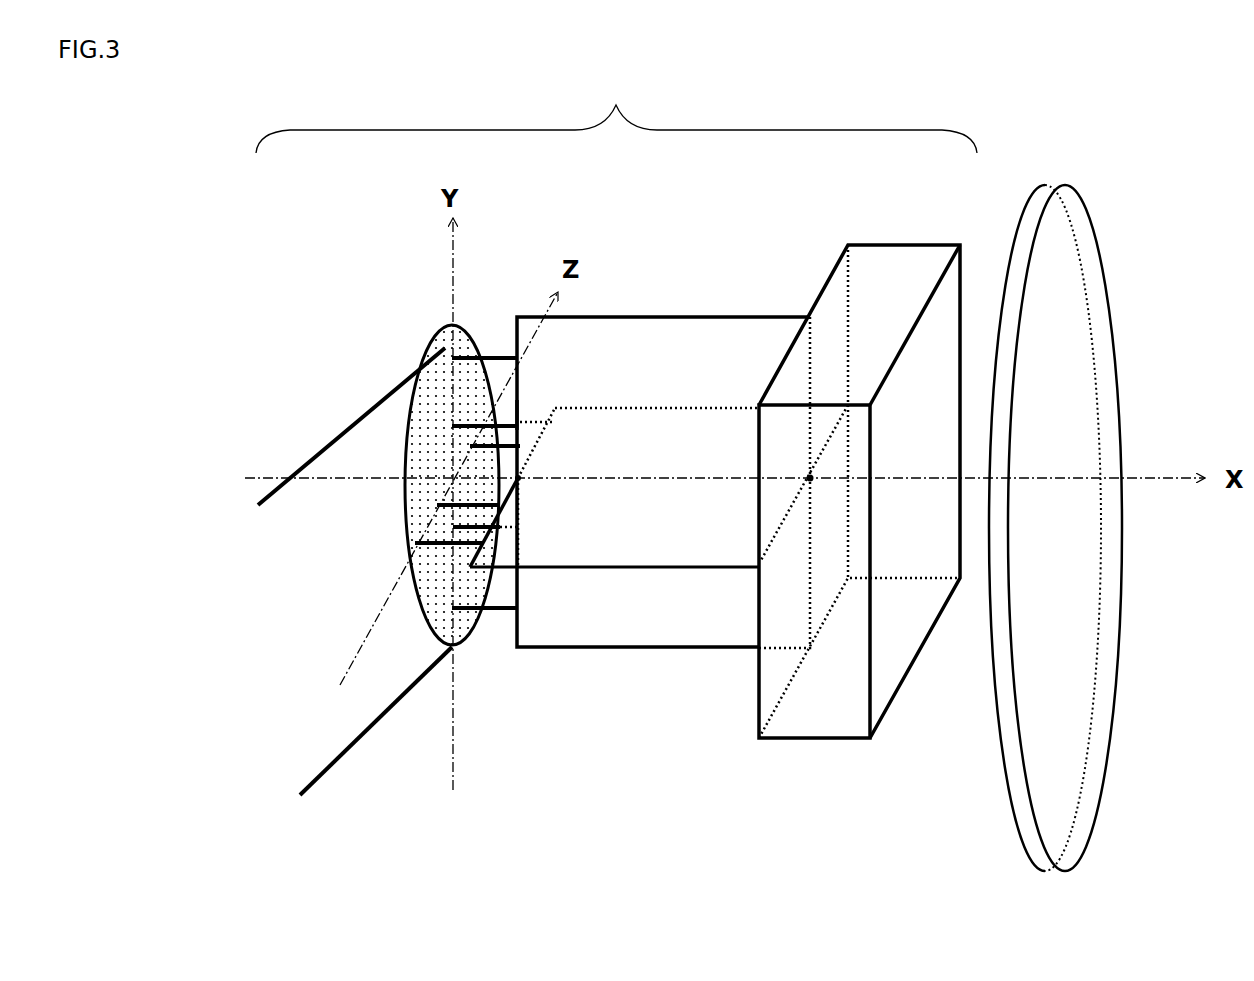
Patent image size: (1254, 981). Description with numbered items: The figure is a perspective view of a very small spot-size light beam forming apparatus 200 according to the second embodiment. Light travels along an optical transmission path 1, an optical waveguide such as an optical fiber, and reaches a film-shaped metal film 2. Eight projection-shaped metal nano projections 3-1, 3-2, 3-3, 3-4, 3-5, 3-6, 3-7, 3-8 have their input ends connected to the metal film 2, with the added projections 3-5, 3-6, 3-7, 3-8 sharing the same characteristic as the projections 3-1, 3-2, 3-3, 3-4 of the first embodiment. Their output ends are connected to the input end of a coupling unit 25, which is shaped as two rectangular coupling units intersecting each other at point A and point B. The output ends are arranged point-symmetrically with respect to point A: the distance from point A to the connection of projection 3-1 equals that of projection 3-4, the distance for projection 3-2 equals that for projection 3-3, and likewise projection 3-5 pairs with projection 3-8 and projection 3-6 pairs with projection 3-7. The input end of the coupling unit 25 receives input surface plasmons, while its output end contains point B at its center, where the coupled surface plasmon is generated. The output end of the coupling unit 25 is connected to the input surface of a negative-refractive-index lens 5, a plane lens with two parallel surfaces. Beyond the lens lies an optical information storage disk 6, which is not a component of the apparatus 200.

The very small spot-size light beam forming apparatus 200 is at (616, 110).
The optical transmission path 1 is at (330, 732).
The metal film 2 is at (440, 328).
The coupling unit 25 is at (703, 317).
The metal nano projection 3-1 is at (490, 355).
The metal nano projection 3-2 is at (455, 425).
The metal nano projection 3-3 is at (504, 530).
The metal nano projection 3-4 is at (495, 612).
The metal nano projection 3-5 is at (518, 425).
The metal nano projection 3-6 is at (480, 445).
The metal nano projection 3-7 is at (475, 505).
The metal nano projection 3-8 is at (430, 542).
The negative-refractive-index lens 5 is at (838, 273).
The optical information storage disk 6 is at (1090, 238).
The point A is at (512, 482).
The point B is at (808, 482).